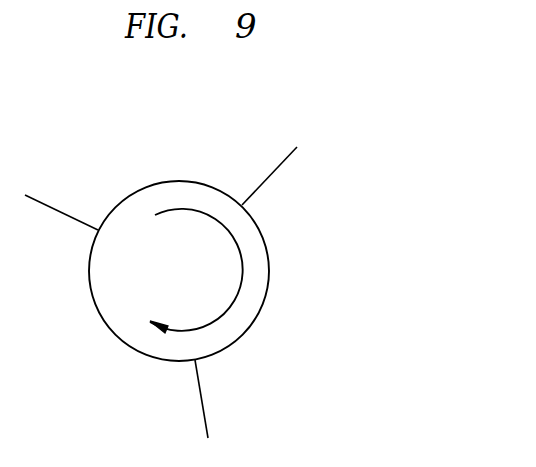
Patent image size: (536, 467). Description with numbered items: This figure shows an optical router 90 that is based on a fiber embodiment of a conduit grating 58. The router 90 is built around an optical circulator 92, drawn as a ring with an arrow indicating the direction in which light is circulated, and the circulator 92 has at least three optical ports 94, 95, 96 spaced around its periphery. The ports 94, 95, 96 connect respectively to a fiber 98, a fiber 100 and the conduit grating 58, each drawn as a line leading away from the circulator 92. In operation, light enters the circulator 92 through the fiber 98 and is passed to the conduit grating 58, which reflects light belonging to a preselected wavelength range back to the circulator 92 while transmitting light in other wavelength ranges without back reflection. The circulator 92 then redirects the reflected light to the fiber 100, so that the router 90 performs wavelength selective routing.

The optical router 90 is at (392, 166).
The optical circulator 92 is at (163, 181).
The optical port 94 is at (98, 228).
The optical port 95 is at (198, 360).
The optical port 96 is at (238, 203).
The fiber 98 is at (43, 200).
The conduit grating 58 is at (275, 170).
The fiber 100 is at (205, 410).